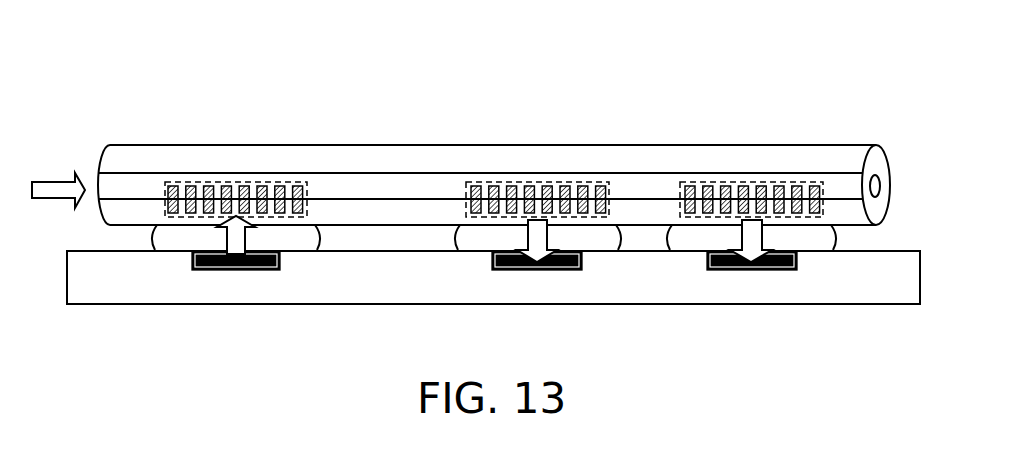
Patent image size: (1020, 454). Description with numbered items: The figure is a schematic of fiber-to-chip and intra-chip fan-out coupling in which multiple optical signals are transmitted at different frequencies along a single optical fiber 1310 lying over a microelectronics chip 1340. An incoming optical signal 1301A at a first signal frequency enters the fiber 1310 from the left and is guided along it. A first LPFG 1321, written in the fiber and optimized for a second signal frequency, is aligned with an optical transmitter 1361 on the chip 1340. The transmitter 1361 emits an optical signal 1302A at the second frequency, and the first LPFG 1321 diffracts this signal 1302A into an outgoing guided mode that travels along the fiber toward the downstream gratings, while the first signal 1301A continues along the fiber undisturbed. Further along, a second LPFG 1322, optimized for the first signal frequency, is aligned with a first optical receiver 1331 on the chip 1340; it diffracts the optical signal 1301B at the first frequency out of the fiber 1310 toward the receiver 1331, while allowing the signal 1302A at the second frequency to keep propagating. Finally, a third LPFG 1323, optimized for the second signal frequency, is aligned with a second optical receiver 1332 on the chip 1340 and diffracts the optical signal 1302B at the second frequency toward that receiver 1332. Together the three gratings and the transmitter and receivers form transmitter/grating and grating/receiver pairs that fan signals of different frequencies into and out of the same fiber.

The optical fiber 1310 is at (368, 160).
The first LPFG 1321 is at (236, 185).
The second LPFG 1322 is at (537, 183).
The third LPFG 1323 is at (750, 182).
The incoming optical signal 1301A is at (58, 190).
The optical signal at the first frequency 1301B is at (537, 239).
The optical signal at the second frequency 1302A is at (233, 238).
The optical signal at the second frequency 1302B is at (750, 239).
The first optical receiver 1331 is at (507, 260).
The second optical receiver 1332 is at (718, 260).
The optical transmitter 1361 is at (203, 260).
The microelectronics chip 1340 is at (493, 277).